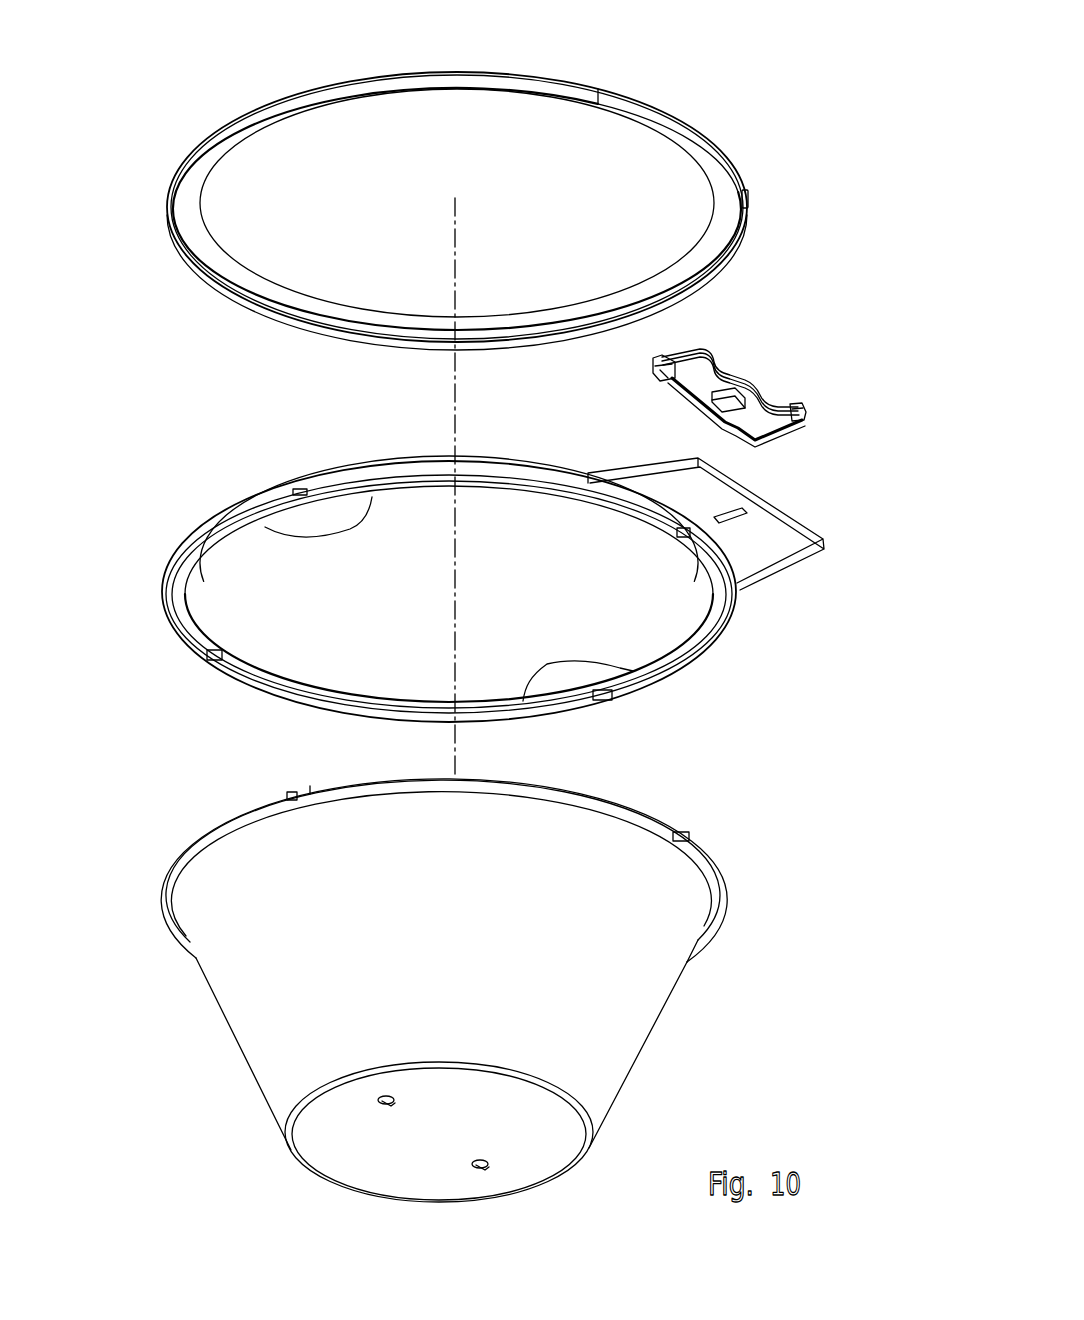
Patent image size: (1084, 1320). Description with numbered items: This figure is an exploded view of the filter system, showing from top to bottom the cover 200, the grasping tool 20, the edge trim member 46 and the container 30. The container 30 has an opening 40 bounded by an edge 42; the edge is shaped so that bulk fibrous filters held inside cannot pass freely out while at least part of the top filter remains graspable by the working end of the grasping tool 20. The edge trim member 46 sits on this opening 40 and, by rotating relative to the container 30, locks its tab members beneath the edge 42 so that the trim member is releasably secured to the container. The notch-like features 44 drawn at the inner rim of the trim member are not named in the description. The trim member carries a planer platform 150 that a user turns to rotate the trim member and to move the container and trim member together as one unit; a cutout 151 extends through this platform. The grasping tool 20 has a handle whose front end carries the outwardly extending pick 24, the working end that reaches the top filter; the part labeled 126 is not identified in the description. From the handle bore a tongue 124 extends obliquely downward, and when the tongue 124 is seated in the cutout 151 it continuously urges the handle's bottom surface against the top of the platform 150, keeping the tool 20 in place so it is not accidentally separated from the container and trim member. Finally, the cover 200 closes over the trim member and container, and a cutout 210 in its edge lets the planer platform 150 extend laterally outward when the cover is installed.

The cover 200 is at (501, 185).
The cutout 210 is at (743, 192).
The grasping tool 20 is at (740, 368).
The clip arm 126 is at (730, 373).
The tongue 124 is at (722, 413).
The pick 24 is at (808, 417).
The edge trim member 46 is at (532, 589).
The notch 44 is at (300, 535).
The opening 40 is at (688, 578).
The planer platform 150 is at (745, 534).
The cutout 151 is at (735, 522).
The container 30 is at (465, 990).
The edge 42 is at (722, 881).